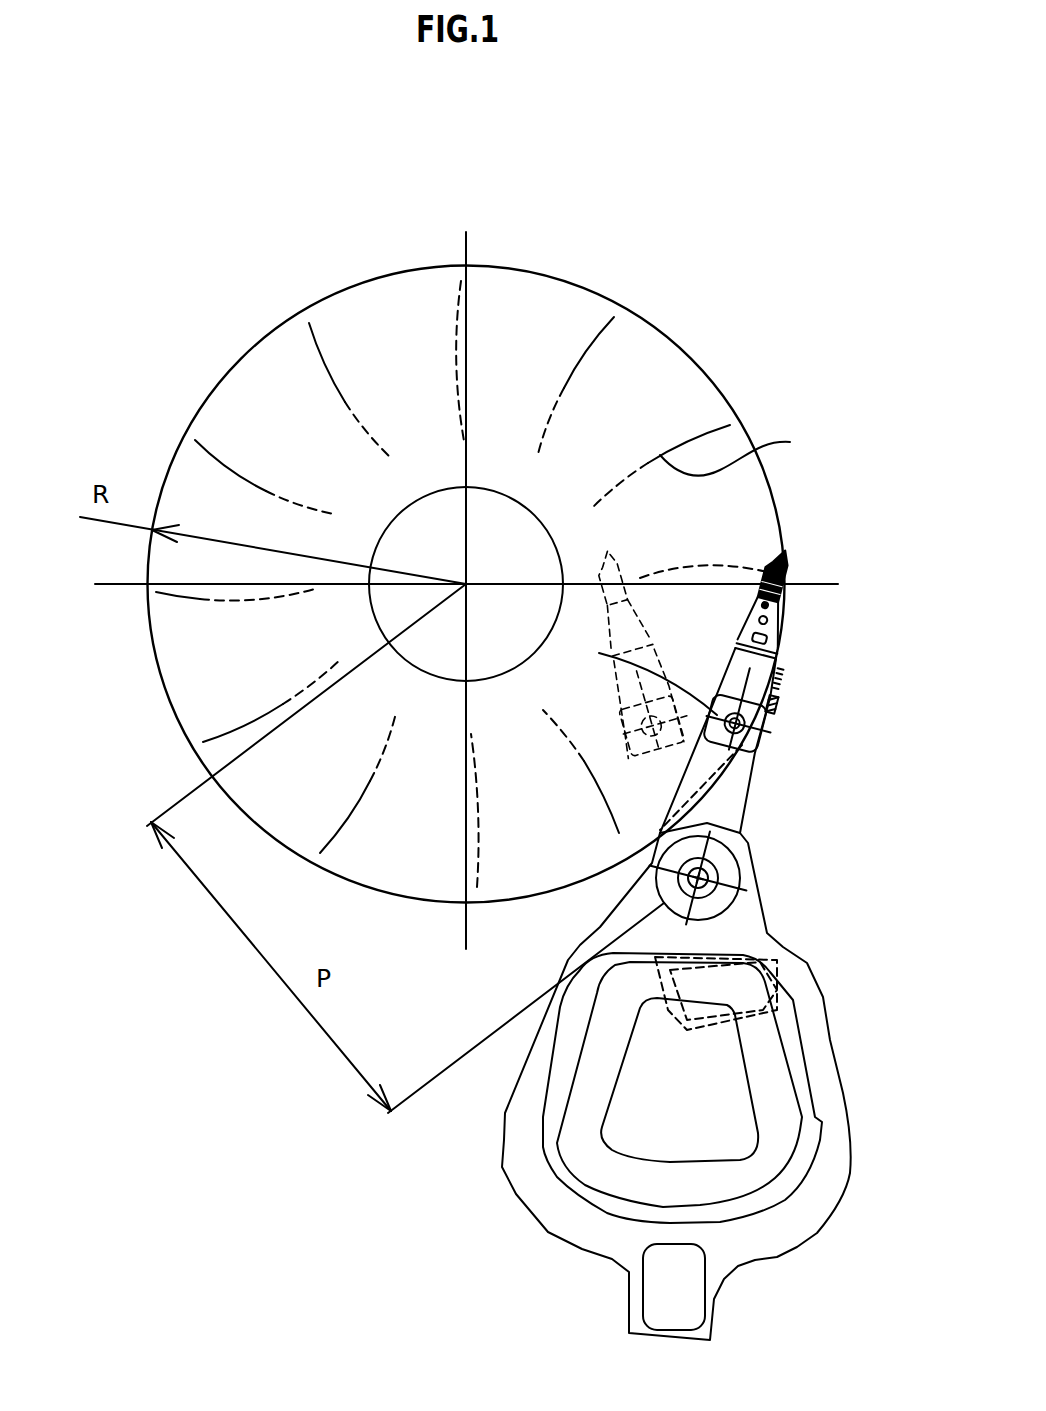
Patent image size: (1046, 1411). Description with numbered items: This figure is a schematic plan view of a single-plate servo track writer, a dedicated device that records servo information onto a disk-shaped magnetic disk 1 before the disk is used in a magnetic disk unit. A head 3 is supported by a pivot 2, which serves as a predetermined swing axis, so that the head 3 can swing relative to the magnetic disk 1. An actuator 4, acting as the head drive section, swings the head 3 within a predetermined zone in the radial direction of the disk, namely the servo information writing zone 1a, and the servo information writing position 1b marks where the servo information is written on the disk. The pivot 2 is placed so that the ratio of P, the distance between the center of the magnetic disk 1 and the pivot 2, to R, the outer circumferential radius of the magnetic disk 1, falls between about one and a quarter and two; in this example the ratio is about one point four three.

The magnetic disk 1 is at (690, 357).
The servo information writing zone 1a is at (557, 298).
The servo information writing position 1b is at (790, 442).
The pivot 2 is at (735, 858).
The head 3 is at (787, 613).
The actuator 4 is at (779, 1258).